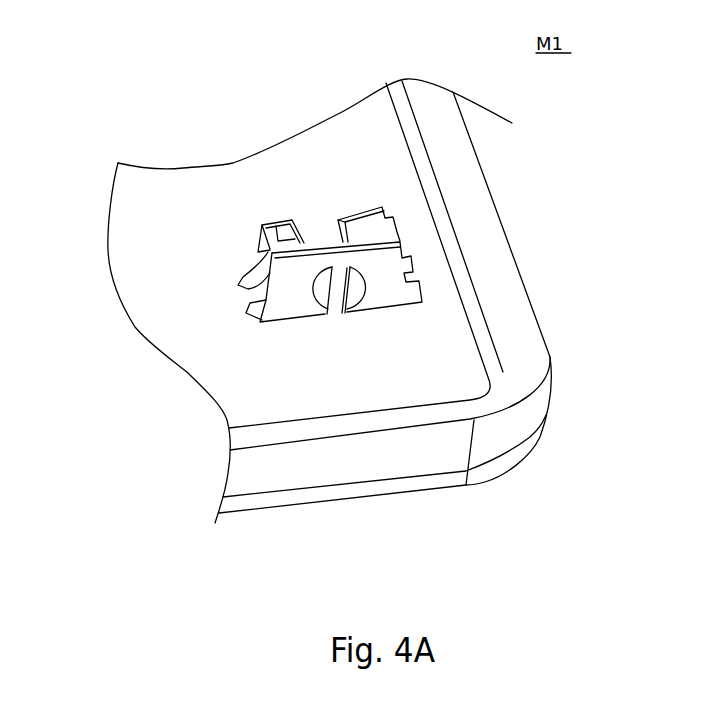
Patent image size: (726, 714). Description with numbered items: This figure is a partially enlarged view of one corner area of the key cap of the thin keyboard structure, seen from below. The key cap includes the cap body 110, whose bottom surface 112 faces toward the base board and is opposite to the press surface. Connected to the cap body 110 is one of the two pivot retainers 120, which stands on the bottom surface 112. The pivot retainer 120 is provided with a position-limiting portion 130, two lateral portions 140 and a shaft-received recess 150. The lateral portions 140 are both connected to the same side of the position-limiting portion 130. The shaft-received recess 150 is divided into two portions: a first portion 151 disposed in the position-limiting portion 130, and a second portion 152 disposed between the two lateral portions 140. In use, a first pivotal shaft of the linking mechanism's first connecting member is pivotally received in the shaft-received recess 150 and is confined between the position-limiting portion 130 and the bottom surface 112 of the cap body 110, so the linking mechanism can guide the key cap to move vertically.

The cap body 110 is at (505, 442).
The bottom surface 112 is at (305, 149).
The pivot retainer 120 is at (635, 170).
The position-limiting portion 130 is at (390, 281).
The lateral portion 140 is at (343, 273).
The shaft-received recess 150 is at (572, 167).
The first portion 151 is at (386, 212).
The second portion 152 is at (323, 224).